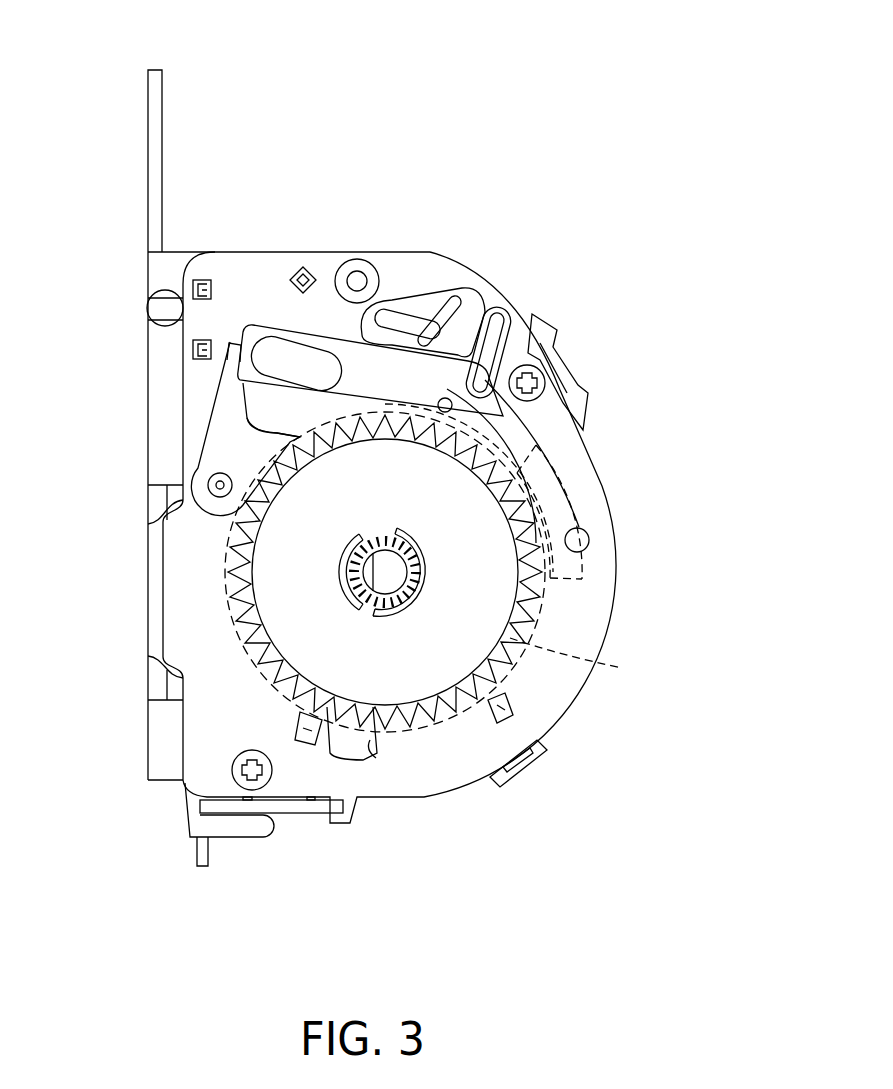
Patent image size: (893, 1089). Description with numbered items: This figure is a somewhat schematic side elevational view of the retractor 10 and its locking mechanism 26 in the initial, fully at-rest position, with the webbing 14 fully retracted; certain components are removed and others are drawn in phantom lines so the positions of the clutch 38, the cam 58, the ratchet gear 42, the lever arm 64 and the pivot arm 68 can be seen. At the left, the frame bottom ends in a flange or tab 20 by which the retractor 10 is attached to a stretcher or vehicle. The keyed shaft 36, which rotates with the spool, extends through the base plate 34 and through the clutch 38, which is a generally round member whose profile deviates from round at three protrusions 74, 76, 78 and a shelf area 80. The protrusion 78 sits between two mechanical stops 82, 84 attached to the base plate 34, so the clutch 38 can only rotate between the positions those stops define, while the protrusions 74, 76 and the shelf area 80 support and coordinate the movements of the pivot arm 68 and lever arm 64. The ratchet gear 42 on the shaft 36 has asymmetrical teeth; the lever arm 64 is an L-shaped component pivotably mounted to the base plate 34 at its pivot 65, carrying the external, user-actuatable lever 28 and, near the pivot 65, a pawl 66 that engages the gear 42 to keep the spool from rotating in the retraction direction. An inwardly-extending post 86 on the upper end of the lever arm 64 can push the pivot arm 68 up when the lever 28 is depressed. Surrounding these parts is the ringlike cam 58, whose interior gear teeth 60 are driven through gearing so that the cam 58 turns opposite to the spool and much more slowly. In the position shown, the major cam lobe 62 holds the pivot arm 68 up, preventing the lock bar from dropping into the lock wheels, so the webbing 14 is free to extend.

The retractor 10 is at (551, 100).
The webbing 14 is at (210, 847).
The flange or tab 20 is at (155, 122).
The locking mechanism 26 is at (606, 458).
The external lever 28 is at (272, 352).
The base plate 34 is at (595, 600).
The keyed shaft 36 is at (418, 572).
The clutch 38 is at (535, 443).
The ratchet gear 42 is at (227, 603).
The cam 58 is at (584, 660).
The interior gear teeth 60 is at (265, 487).
The major cam lobe 62 is at (600, 570).
The lever arm 64 is at (337, 338).
The pivot 65 is at (208, 484).
The pawl 66 is at (300, 445).
The pivot arm 68 is at (428, 286).
The protrusion 74 is at (545, 420).
The protrusion 76 is at (567, 485).
The protrusion 78 is at (377, 738).
The shelf area 80 is at (322, 424).
The mechanical stop 82 is at (510, 707).
The mechanical stop 84 is at (297, 747).
The inwardly-extending post 86 is at (452, 400).